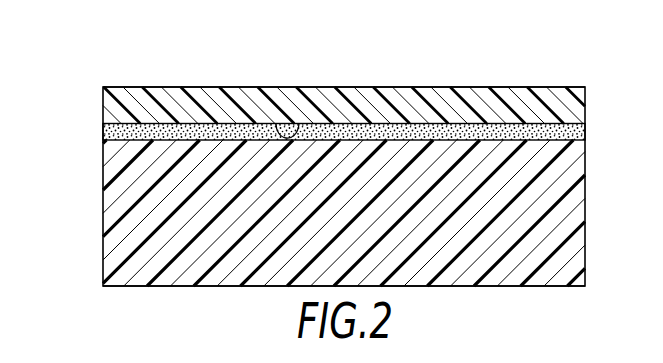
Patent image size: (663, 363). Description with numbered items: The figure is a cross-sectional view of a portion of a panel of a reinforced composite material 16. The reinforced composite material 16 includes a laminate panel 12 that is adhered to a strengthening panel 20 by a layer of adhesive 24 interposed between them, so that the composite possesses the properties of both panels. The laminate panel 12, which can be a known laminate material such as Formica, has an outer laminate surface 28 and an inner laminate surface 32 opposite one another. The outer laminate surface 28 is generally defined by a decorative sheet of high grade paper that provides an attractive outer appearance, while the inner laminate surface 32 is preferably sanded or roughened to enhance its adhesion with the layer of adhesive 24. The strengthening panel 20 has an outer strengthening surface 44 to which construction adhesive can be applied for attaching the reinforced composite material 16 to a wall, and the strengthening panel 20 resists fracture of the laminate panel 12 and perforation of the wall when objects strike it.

The reinforced composite material 16 is at (483, 85).
The laminate panel 12 is at (140, 87).
The outer laminate surface 28 is at (207, 87).
The layer of adhesive 24 is at (103, 132).
The inner laminate surface 32 is at (299, 124).
The strengthening panel 20 is at (102, 205).
The outer strengthening surface 44 is at (172, 287).